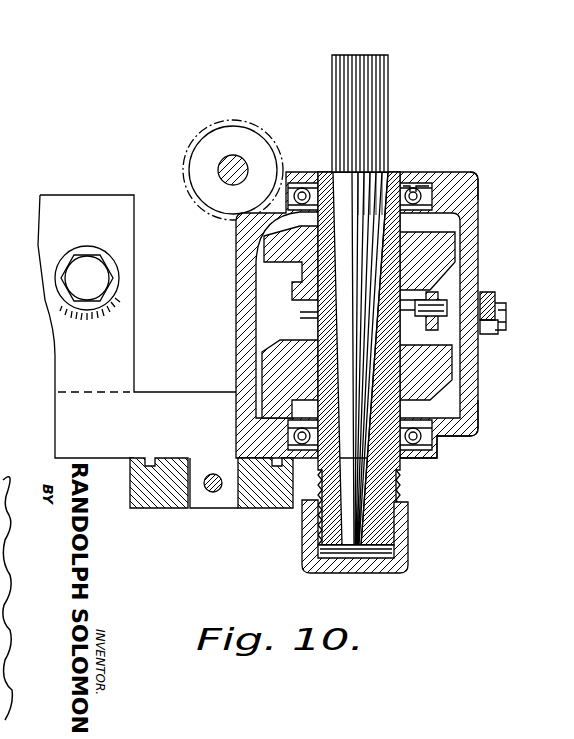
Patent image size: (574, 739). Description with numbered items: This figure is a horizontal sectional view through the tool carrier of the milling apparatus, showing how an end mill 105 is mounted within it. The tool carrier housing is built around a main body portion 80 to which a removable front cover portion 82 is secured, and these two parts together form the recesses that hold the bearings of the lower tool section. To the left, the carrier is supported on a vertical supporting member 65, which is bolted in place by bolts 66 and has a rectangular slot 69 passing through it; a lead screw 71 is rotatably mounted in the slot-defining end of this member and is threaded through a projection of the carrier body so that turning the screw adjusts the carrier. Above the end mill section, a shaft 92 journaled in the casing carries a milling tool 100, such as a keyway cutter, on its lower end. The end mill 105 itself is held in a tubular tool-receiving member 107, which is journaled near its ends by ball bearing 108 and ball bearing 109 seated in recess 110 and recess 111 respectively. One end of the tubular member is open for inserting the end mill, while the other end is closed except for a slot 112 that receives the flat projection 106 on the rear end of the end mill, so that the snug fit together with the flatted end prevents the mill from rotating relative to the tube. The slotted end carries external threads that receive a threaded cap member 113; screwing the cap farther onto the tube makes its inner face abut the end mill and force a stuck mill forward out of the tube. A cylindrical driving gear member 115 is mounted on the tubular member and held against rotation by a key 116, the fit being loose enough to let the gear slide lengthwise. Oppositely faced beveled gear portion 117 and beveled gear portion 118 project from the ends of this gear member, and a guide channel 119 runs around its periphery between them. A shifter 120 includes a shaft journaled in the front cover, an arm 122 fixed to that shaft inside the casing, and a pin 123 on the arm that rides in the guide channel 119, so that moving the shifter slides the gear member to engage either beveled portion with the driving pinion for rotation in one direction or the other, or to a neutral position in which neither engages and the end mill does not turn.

The vertical supporting member 65 is at (162, 500).
The bolts 66 is at (103, 278).
The rectangular slot 69 is at (232, 505).
The lead screw 71 is at (213, 492).
The main body portion 80 is at (240, 280).
The front cover portion 82 is at (487, 180).
The shaft 92 is at (237, 183).
The milling tool 100 is at (258, 127).
The end mill 105 is at (388, 138).
The flat projection 106 is at (354, 546).
The tubular tool-receiving member 107 is at (402, 478).
The ball bearing 108 is at (414, 185).
The ball bearing 109 is at (437, 448).
The recess 110 is at (428, 201).
The recess 111 is at (476, 420).
The slot 112 is at (404, 528).
The threaded cap member 113 is at (408, 557).
The cylindrical driving gear member 115 is at (432, 270).
The key 116 is at (320, 333).
The beveled gear portion 117 is at (445, 372).
The beveled gear portion 118 is at (447, 240).
The guide channel 119 is at (295, 305).
The shifter 120 is at (496, 298).
The arm 122 is at (445, 330).
The pin 123 is at (437, 300).